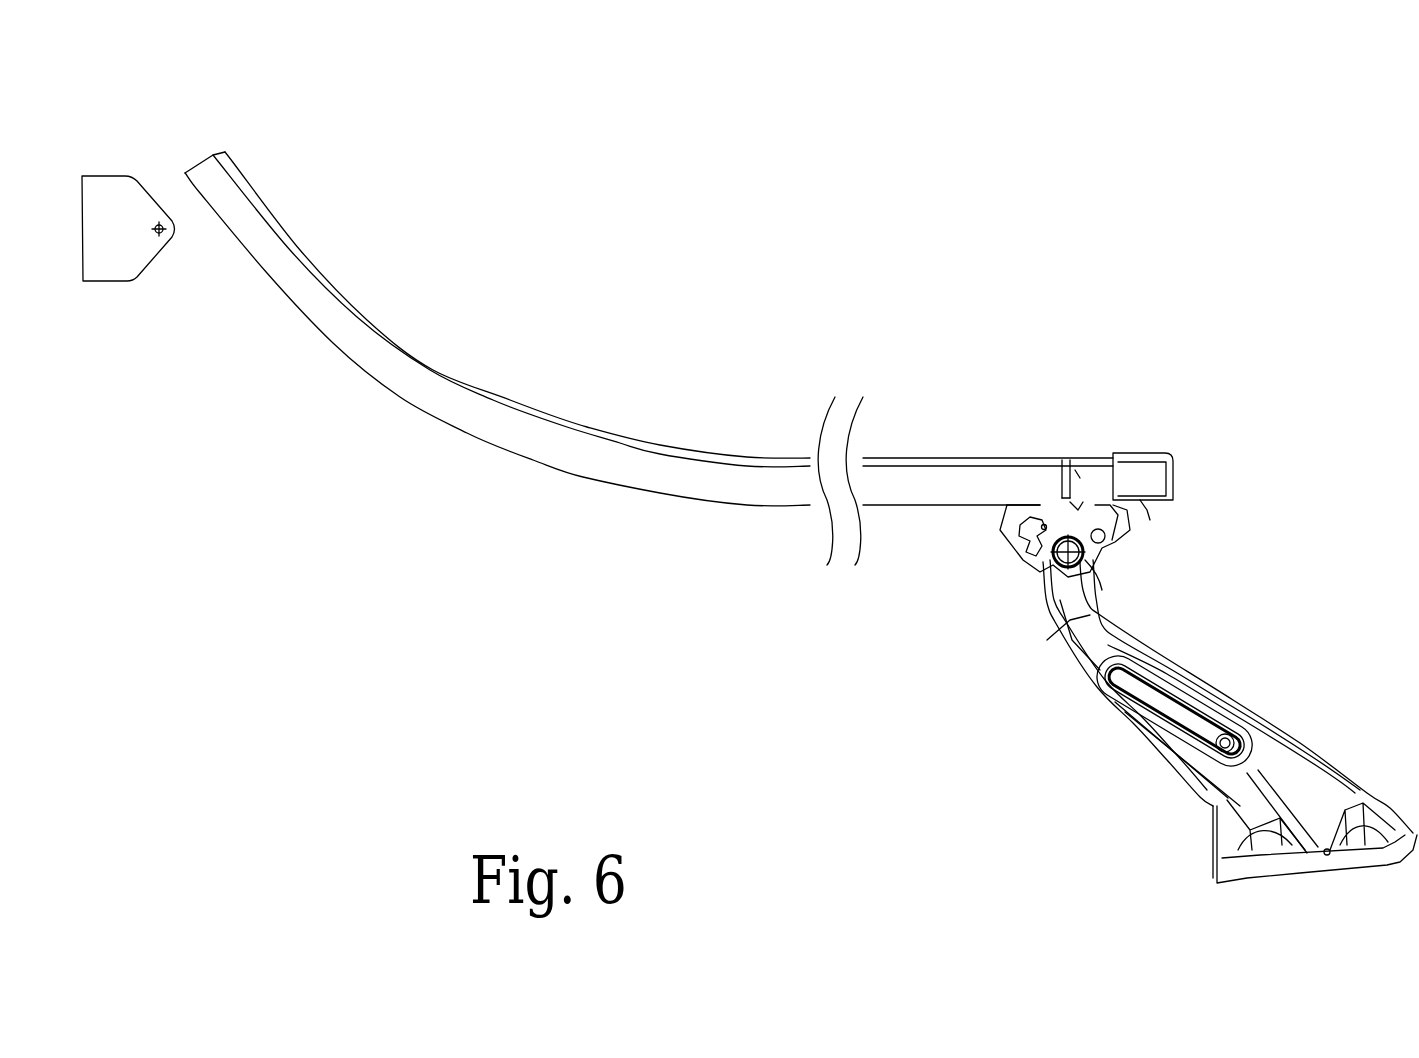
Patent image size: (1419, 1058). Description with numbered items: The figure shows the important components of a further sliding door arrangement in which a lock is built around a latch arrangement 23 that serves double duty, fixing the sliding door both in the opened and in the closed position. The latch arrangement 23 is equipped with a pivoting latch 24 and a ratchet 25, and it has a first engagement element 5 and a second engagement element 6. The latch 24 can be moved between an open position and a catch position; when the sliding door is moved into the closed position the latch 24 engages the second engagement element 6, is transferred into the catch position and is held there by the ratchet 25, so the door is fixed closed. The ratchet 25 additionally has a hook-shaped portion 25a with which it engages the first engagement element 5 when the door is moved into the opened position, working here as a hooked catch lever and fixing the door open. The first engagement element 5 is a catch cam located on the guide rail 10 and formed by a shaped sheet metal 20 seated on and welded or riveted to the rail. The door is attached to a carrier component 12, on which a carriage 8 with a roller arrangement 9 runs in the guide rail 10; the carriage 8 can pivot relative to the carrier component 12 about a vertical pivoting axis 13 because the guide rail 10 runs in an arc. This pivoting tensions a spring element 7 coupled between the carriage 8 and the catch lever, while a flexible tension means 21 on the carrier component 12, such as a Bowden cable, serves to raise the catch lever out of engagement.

The second engagement element 6 is at (130, 227).
The latch arrangement 23 is at (192, 288).
The ratchet 25 is at (980, 468).
The sheet metal 20 is at (1063, 435).
The roller arrangement 9 is at (1092, 460).
The first engagement element 5 is at (1110, 463).
The guide rail 10 is at (1150, 460).
The hook-shaped portion 25a is at (1173, 467).
The carriage 8 is at (1118, 528).
The vertical pivoting axis 13 is at (1105, 552).
The spring element 7 is at (1112, 575).
The carrier component 12 is at (1103, 630).
The latch 24 is at (1012, 567).
The flexible tension means 21 is at (1083, 618).